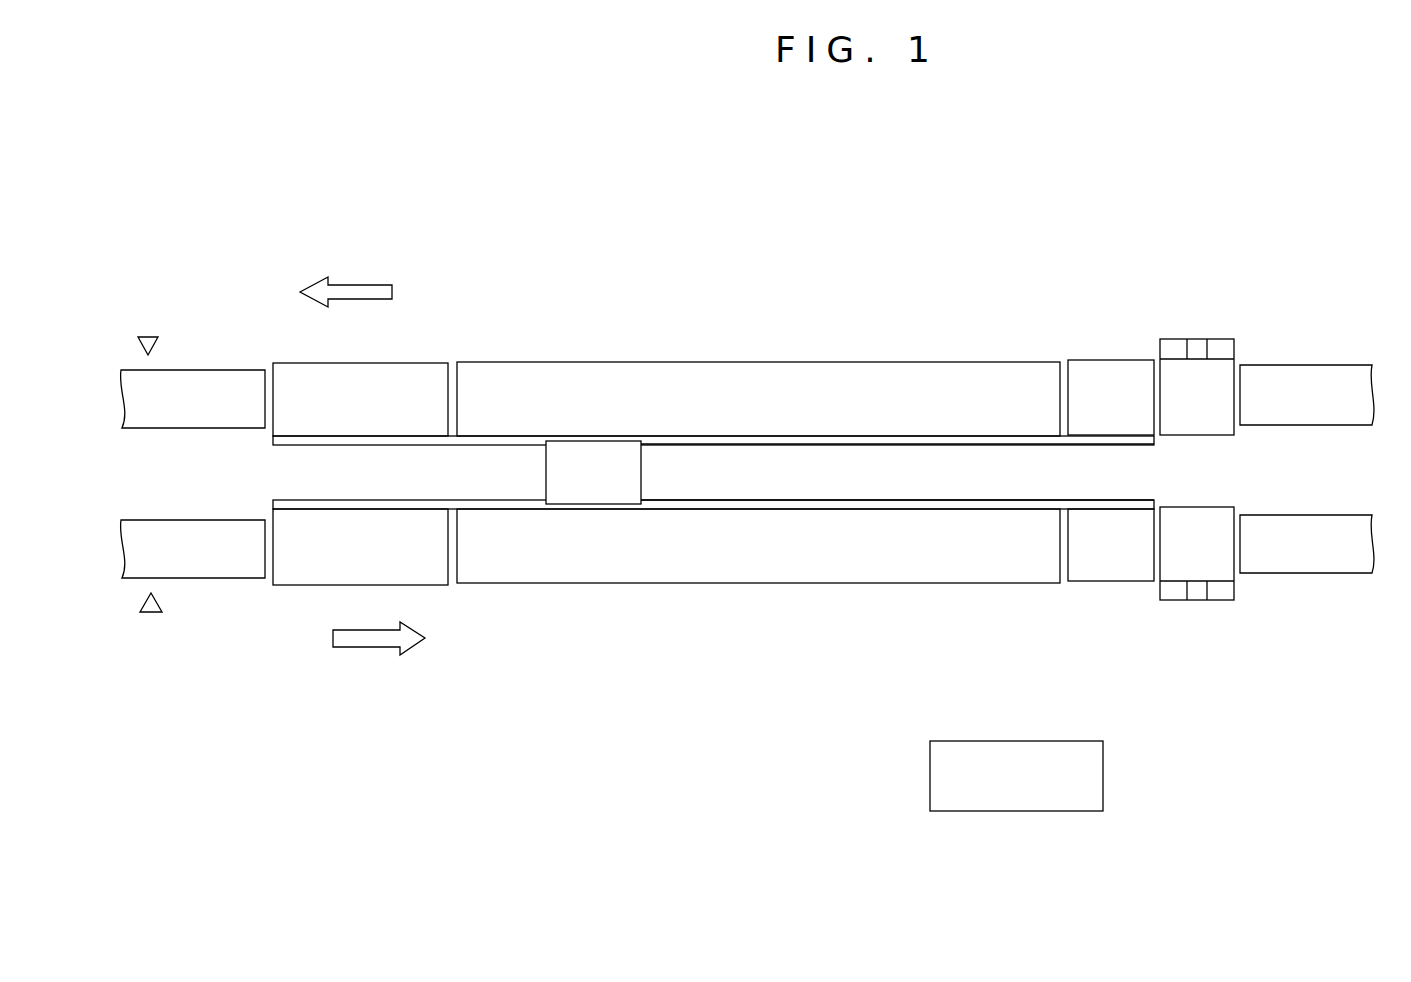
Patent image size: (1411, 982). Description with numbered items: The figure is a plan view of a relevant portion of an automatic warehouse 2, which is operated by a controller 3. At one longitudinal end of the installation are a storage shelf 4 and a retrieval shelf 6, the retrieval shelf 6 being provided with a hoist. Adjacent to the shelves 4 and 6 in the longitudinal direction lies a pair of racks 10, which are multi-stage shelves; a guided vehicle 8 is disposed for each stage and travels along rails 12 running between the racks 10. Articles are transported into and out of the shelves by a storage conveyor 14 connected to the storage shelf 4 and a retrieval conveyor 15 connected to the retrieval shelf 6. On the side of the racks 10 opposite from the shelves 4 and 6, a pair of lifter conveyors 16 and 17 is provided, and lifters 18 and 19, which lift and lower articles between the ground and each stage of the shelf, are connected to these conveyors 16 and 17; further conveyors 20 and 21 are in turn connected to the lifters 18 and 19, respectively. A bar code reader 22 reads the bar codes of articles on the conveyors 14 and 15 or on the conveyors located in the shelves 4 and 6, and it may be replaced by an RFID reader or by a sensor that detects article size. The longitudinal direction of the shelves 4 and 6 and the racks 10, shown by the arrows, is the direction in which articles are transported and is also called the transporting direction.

The automatic warehouse 2 is at (779, 807).
The controller 3 is at (1037, 800).
The storage shelf 4 is at (310, 568).
The retrieval shelf 6 is at (345, 378).
The guided vehicle 8 is at (628, 468).
The racks 10 is at (820, 376).
The rails 12 is at (832, 444).
The storage conveyor 14 is at (223, 568).
The retrieval conveyor 15 is at (200, 378).
The lifter conveyor 16 is at (1112, 565).
The lifter conveyor 17 is at (1090, 375).
The lifter 18 is at (1215, 565).
The lifter 19 is at (1212, 378).
The conveyor 20 is at (1328, 565).
The conveyor 21 is at (1328, 372).
The bar code reader 22 is at (146, 336).